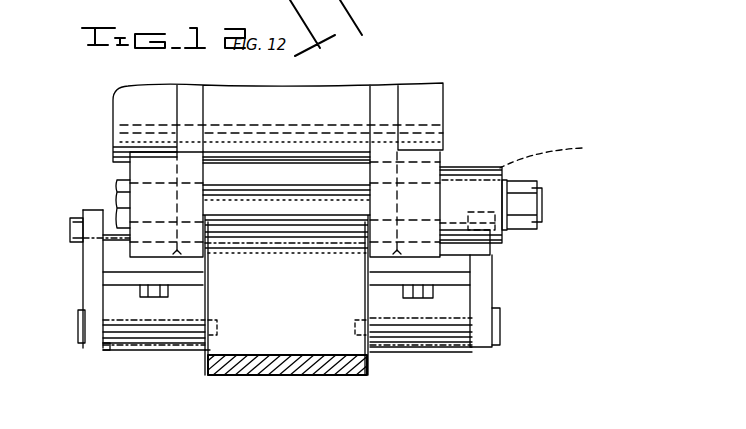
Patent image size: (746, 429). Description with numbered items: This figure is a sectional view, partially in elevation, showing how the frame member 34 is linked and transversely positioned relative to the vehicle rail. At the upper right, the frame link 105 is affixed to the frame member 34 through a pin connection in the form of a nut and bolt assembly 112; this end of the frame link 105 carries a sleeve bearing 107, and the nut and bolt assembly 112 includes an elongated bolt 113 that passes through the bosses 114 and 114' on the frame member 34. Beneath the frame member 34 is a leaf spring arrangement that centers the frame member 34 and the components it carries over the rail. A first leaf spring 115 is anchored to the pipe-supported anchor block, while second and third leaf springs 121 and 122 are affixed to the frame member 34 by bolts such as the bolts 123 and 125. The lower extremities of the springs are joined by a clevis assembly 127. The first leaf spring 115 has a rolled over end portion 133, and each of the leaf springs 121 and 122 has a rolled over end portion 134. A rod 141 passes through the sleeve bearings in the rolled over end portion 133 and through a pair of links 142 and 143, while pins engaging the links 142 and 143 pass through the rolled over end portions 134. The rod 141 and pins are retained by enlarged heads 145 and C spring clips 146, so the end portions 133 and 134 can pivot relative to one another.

The frame member 34 is at (430, 108).
The frame link 105 is at (493, 166).
The sleeve bearing 107 is at (557, 154).
The nut and bolt assembly 112 is at (549, 192).
The elongated bolt 113 is at (272, 183).
The boss 114 is at (137, 204).
The boss 114' is at (436, 196).
The first leaf spring 115 is at (292, 358).
The second leaf spring 121 is at (120, 280).
The third leaf spring 122 is at (450, 272).
The bolt 123 is at (150, 295).
The bolt 125 is at (422, 292).
The clevis assembly 127 is at (86, 360).
The rolled over end portion 133 is at (312, 222).
The rolled over end portion 134 is at (140, 350).
The rod 141 is at (72, 228).
The link 142 is at (88, 260).
The link 143 is at (488, 263).
The enlarged head 145 is at (78, 330).
The C spring clip 146 is at (93, 212).